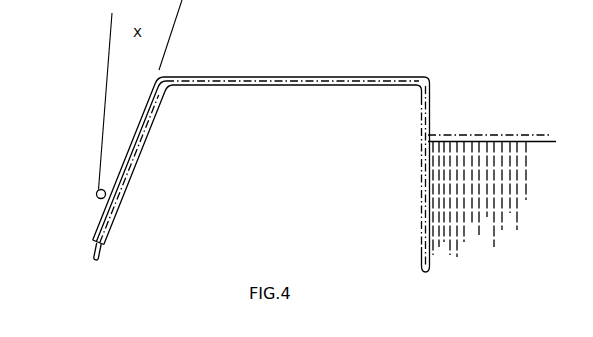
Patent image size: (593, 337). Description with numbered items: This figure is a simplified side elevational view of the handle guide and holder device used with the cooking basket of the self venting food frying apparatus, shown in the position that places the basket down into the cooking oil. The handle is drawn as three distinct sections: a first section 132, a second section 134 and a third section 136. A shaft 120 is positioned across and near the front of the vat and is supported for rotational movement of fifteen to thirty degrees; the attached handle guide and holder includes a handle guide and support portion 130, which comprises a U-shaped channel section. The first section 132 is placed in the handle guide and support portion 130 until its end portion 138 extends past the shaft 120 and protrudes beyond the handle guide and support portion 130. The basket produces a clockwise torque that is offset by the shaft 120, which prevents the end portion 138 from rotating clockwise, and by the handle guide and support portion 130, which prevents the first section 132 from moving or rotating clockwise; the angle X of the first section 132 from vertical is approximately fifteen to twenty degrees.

The shaft 120 is at (96, 194).
The handle guide and support portion 130 is at (138, 173).
The first section 132 is at (143, 111).
The second section 134 is at (269, 86).
The third section 136 is at (492, 186).
The end portion 138 is at (96, 260).